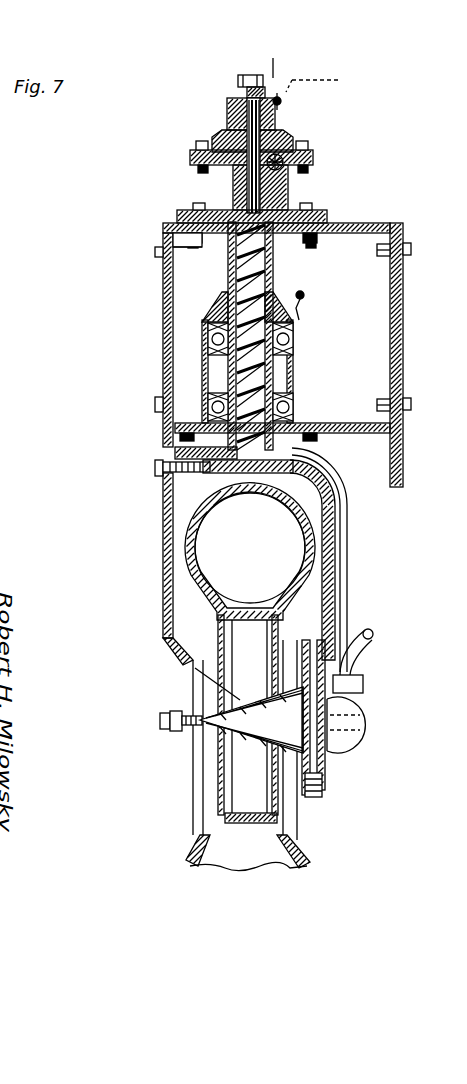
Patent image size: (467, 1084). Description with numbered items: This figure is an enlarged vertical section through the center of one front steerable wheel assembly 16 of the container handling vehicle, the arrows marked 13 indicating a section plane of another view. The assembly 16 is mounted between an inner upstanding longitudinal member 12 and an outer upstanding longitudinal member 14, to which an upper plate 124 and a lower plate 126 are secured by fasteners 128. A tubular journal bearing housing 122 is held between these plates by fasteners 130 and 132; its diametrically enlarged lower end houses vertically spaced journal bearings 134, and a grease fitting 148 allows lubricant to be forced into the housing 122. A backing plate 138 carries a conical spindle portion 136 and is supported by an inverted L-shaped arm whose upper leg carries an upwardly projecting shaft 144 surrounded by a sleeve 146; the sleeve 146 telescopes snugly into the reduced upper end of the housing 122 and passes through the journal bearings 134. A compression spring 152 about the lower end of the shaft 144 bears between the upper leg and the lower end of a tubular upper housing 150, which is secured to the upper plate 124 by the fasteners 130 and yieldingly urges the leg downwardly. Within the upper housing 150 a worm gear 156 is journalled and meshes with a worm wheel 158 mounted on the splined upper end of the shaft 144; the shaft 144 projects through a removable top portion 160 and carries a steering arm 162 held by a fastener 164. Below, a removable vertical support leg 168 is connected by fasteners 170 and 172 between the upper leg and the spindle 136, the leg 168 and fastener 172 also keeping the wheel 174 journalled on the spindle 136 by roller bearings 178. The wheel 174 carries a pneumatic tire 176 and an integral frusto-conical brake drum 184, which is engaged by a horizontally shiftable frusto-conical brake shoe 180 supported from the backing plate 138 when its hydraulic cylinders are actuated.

The inner upstanding longitudinal member 12 is at (398, 350).
The section line 13 is at (280, 64).
The outer upstanding longitudinal member 14 is at (168, 332).
The front steerable wheel assembly 16 is at (324, 345).
The tubular journal bearing housing 122 is at (185, 301).
The upper plate 124 is at (380, 223).
The lower plate 126 is at (354, 426).
The fastener 128 is at (411, 250).
The fastener 130 is at (202, 211).
The fastener 132 is at (310, 441).
The journal bearing 134 is at (296, 388).
The conical spindle portion 136 is at (250, 735).
The backing plate 138 is at (324, 790).
The shaft 144 is at (200, 362).
The sleeve 146 is at (175, 453).
The grease fitting 148 is at (306, 297).
The tubular upper housing 150 is at (222, 190).
The compression spring 152 is at (236, 285).
The worm gear 156 is at (306, 176).
The worm wheel 158 is at (228, 127).
The removable top portion 160 is at (296, 142).
The steering arm 162 is at (282, 110).
The fastener 164 is at (238, 83).
The removable support leg 168 is at (170, 586).
The fastener 170 is at (156, 470).
The fastener 172 is at (162, 715).
The wheel 174 is at (213, 667).
The pneumatic tire 176 is at (292, 566).
The roller bearing 178 is at (328, 758).
The frusto-conical brake shoe 180 is at (346, 645).
The frusto-conical brake drum 184 is at (283, 660).